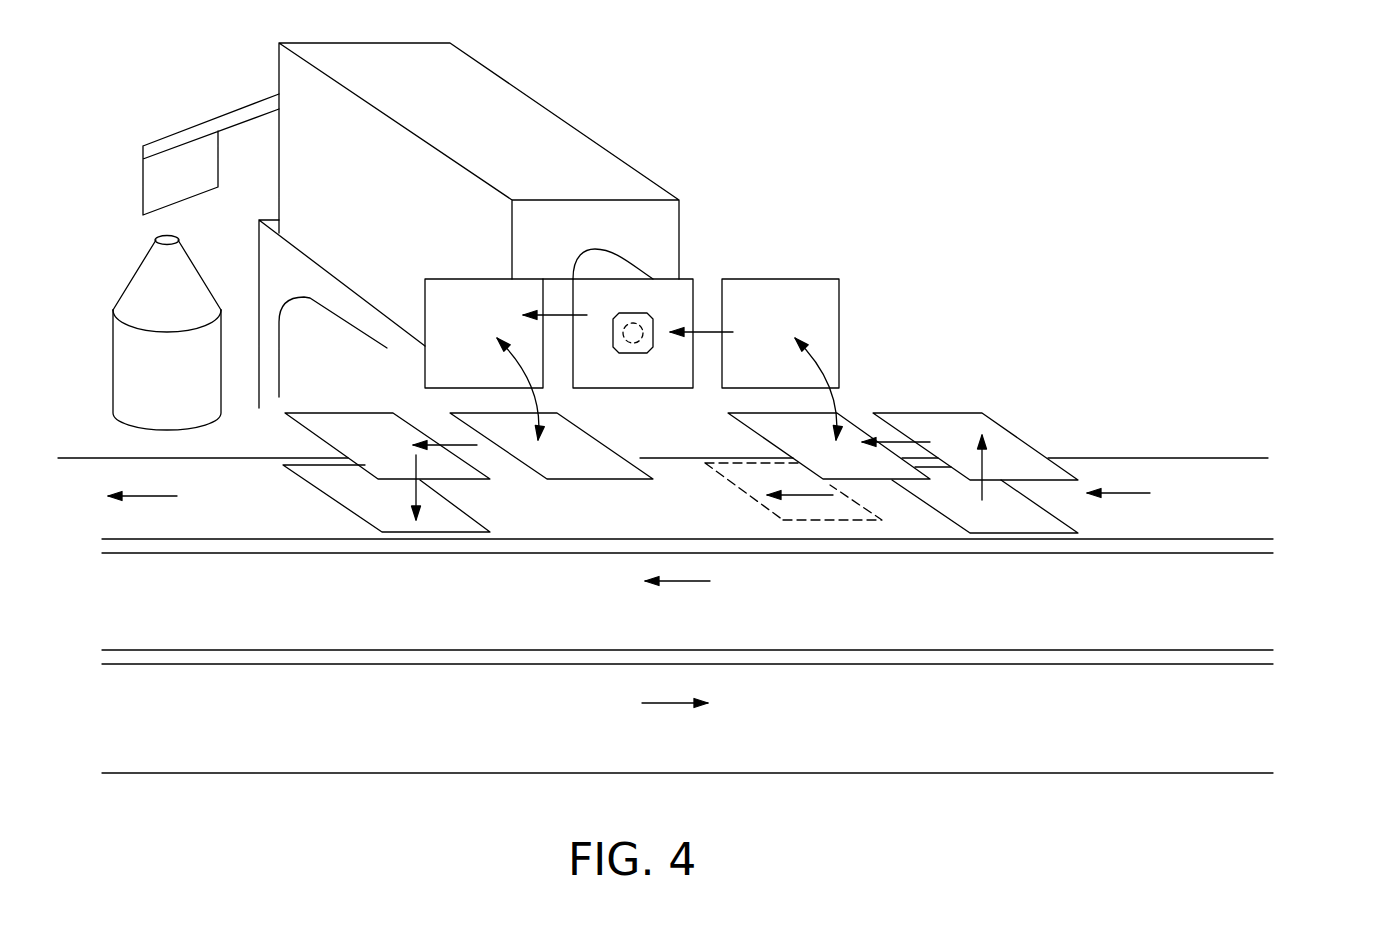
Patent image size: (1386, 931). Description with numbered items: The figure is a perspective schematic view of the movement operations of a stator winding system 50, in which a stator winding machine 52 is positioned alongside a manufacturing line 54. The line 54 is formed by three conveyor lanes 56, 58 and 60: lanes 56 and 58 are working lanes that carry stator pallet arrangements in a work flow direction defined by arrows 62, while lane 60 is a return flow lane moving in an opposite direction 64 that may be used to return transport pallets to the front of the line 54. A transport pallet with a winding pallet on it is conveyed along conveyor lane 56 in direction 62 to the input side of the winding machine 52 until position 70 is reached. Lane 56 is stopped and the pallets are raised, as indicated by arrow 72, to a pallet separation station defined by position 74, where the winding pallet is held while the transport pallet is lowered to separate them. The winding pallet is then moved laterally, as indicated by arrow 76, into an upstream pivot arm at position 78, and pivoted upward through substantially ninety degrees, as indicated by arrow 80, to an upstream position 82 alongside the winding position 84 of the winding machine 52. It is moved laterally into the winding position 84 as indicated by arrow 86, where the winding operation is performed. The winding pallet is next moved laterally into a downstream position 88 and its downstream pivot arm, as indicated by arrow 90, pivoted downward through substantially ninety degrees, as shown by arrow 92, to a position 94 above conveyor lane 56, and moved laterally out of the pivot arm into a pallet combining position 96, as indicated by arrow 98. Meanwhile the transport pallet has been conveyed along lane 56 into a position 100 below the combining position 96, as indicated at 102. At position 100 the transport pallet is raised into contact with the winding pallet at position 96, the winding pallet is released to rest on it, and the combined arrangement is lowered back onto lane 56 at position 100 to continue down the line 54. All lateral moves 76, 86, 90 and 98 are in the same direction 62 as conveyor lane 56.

The system 50 is at (887, 158).
The stator winding machine 52 is at (511, 95).
The manufacturing line 54 is at (711, 621).
The conveyor lane 56 is at (1227, 473).
The conveyor lane 58 is at (1205, 637).
The conveyor lane 60 is at (687, 800).
The work flow direction 62 is at (1120, 493).
The opposite direction 64 is at (678, 705).
The position 70 is at (1060, 522).
The arrow 72 is at (978, 488).
The pallet separation station 74 is at (1003, 428).
The arrow 76 is at (922, 440).
The position 78 is at (750, 422).
The arrow 80 is at (836, 396).
The upstream position 82 is at (820, 279).
The winding position 84 is at (686, 278).
The arrow 86 is at (707, 332).
The downstream position 88 is at (445, 283).
The arrow 90 is at (565, 312).
The arrow 92 is at (532, 398).
The position 94 is at (578, 472).
The pallet combining position 96 is at (358, 418).
The arrow 98 is at (443, 443).
The position 100 is at (325, 487).
The conveyance of transport pallet 102 is at (750, 497).